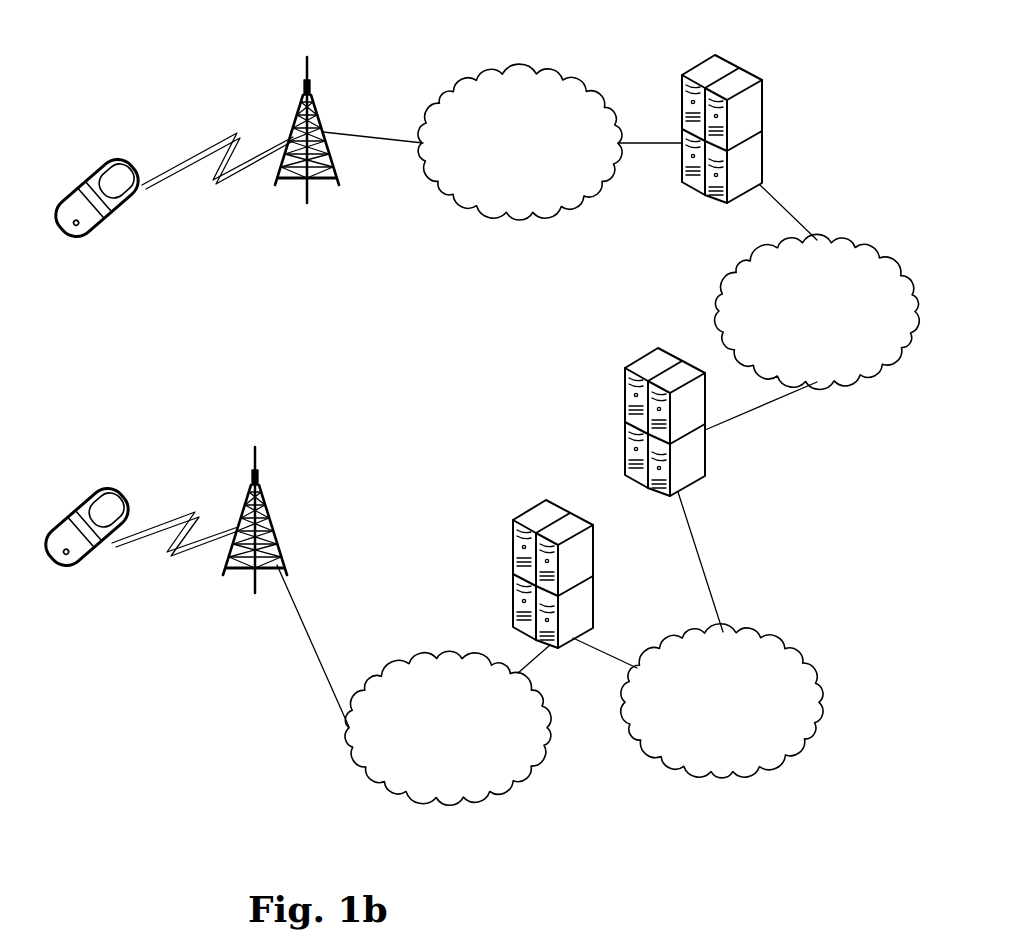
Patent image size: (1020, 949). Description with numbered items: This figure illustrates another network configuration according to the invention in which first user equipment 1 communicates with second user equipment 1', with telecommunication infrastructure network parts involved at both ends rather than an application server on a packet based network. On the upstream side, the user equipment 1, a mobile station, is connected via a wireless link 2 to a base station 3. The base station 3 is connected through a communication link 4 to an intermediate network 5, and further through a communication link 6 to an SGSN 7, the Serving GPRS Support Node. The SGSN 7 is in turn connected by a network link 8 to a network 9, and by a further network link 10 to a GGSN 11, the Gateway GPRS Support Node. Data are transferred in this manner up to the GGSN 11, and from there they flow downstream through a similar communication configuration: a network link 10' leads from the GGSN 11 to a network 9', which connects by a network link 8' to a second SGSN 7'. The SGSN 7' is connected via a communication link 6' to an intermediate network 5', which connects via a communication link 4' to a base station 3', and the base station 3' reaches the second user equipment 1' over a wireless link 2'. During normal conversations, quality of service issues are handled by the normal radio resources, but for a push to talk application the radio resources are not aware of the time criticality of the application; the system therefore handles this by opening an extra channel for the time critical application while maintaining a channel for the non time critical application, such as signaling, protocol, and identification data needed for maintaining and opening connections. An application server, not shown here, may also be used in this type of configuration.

The user equipment 1 is at (96, 181).
The wireless link 2 is at (217, 134).
The base station 3 is at (307, 106).
The communication link 4 is at (373, 93).
The intermediate network 5 is at (520, 124).
The communication link 6 is at (650, 85).
The SGSN 7 is at (722, 103).
The network link 8 is at (804, 198).
The network 9 is at (796, 311).
The network link 10 is at (765, 420).
The GGSN 11 is at (622, 415).
The second user equipment 1' is at (86, 567).
The wireless link 2' is at (175, 567).
The base station 3' is at (250, 494).
The communication link 4' is at (315, 646).
The intermediate network 5' is at (448, 700).
The communication link 6' is at (557, 695).
The SGSN 7' is at (529, 559).
The network link 8' is at (606, 724).
The network 9' is at (737, 701).
The network link 10' is at (749, 562).